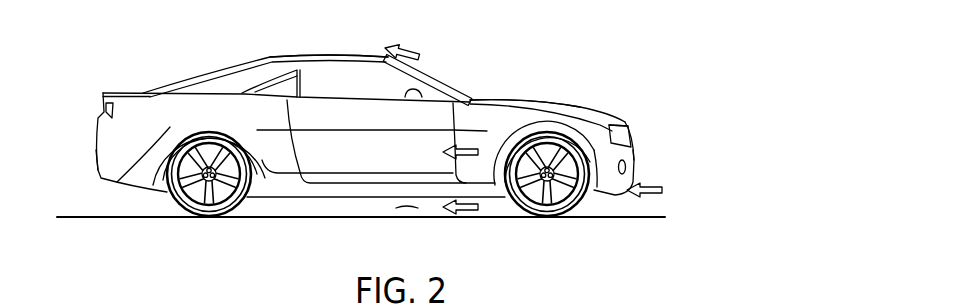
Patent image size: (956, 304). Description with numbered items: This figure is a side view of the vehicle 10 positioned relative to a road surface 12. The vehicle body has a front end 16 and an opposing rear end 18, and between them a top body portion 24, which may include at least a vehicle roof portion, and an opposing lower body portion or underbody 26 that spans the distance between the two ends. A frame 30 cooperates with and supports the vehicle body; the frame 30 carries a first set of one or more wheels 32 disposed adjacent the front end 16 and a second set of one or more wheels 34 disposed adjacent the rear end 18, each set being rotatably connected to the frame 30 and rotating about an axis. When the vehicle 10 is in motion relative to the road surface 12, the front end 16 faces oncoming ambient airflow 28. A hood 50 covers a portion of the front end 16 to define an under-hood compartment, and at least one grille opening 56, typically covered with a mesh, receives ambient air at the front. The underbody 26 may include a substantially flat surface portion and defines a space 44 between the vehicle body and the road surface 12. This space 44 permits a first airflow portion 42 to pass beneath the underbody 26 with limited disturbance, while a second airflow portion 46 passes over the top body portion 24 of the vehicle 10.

The vehicle 10 is at (452, 79).
The road surface 12 is at (592, 219).
The front end 16 is at (633, 152).
The rear end 18 is at (97, 166).
The top body portion 24 is at (306, 57).
The underbody 26 is at (294, 199).
The oncoming ambient airflow 28 is at (662, 187).
The frame 30 is at (503, 205).
The first set of wheels 32 is at (577, 150).
The second set of wheels 34 is at (178, 150).
The first airflow portion 42 is at (463, 213).
The space 44 is at (404, 211).
The second airflow portion 46 is at (419, 47).
The hood 50 is at (522, 96).
The grille opening 56 is at (630, 125).